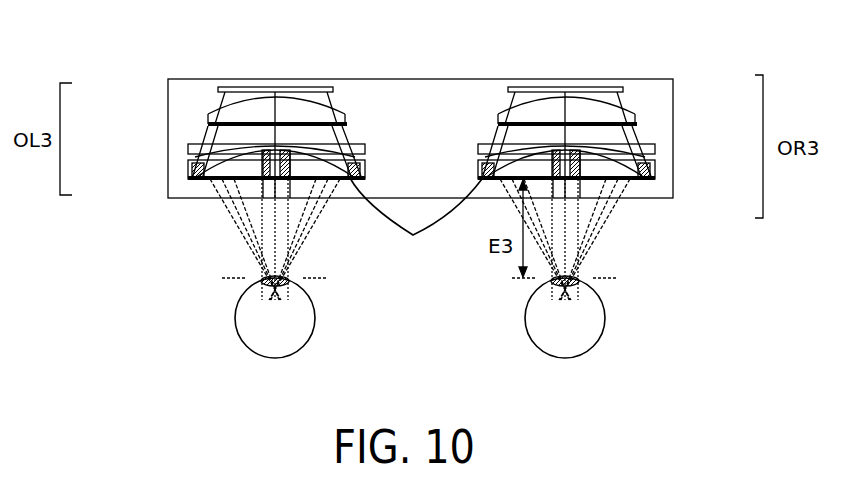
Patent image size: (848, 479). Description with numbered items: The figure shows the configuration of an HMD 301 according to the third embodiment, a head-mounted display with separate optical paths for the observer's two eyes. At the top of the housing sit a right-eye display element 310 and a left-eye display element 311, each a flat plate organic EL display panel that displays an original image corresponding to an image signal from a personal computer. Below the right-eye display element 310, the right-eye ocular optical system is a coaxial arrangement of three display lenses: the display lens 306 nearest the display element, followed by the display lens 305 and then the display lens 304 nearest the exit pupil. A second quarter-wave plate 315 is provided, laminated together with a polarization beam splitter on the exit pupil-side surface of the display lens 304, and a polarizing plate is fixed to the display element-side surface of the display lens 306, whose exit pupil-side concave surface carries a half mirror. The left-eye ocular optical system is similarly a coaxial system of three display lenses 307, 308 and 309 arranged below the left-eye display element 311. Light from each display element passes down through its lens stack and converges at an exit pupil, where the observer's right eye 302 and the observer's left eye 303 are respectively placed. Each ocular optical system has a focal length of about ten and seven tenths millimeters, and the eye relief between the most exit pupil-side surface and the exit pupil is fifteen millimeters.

The HMD 301 is at (207, 82).
The observer's right eye 302 is at (580, 327).
The observer's left eye 303 is at (290, 305).
The display lens 304 is at (647, 173).
The display lens 305 is at (653, 152).
The display lens 306 is at (633, 122).
The display lens 307 is at (190, 172).
The display lens 308 is at (190, 148).
The display lens 309 is at (210, 120).
The right-eye display element 310 is at (590, 87).
The left-eye display element 311 is at (297, 87).
The second λ/4 plate 315 is at (416, 220).